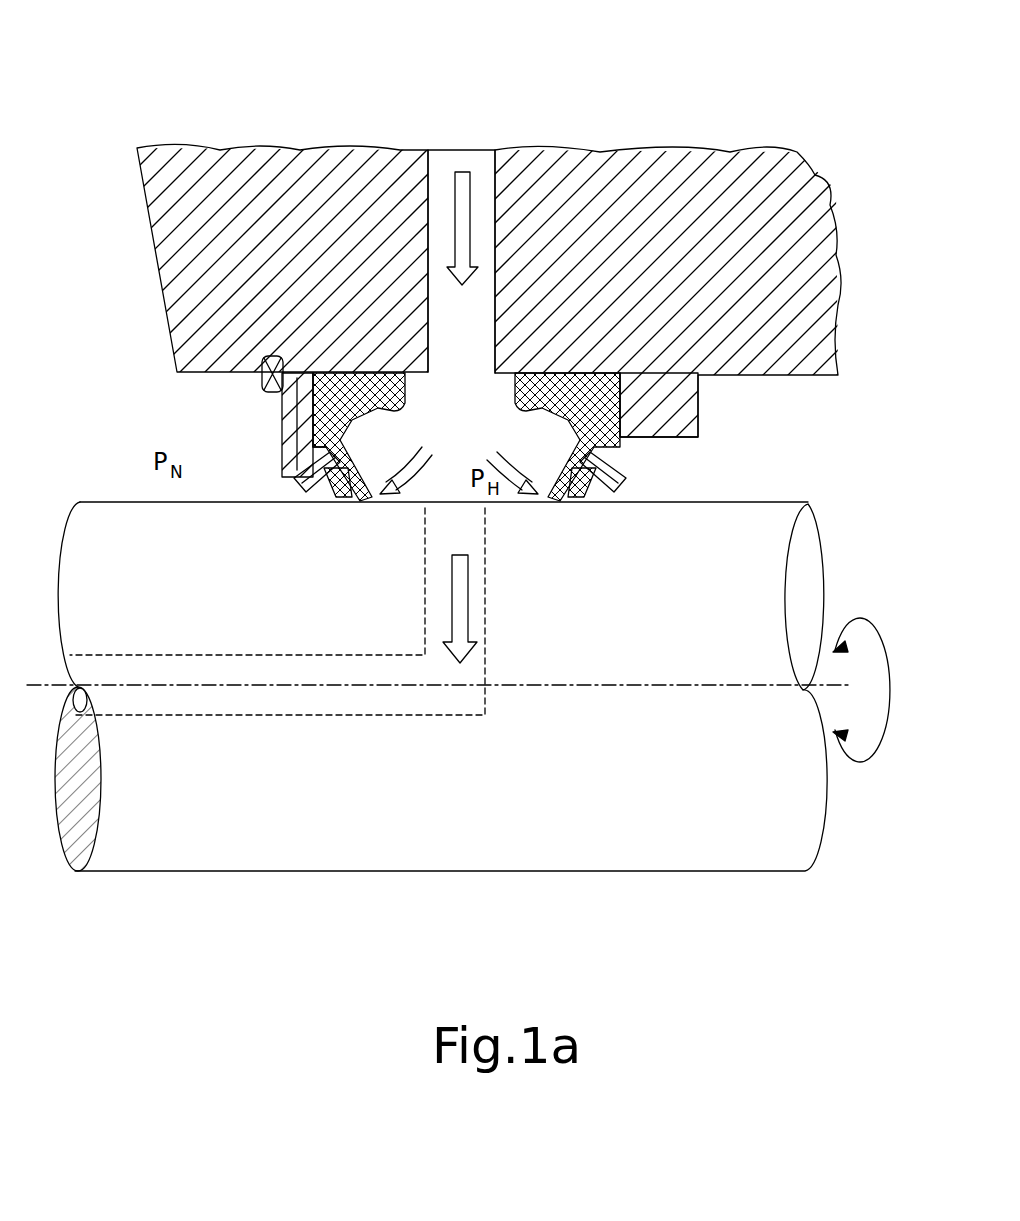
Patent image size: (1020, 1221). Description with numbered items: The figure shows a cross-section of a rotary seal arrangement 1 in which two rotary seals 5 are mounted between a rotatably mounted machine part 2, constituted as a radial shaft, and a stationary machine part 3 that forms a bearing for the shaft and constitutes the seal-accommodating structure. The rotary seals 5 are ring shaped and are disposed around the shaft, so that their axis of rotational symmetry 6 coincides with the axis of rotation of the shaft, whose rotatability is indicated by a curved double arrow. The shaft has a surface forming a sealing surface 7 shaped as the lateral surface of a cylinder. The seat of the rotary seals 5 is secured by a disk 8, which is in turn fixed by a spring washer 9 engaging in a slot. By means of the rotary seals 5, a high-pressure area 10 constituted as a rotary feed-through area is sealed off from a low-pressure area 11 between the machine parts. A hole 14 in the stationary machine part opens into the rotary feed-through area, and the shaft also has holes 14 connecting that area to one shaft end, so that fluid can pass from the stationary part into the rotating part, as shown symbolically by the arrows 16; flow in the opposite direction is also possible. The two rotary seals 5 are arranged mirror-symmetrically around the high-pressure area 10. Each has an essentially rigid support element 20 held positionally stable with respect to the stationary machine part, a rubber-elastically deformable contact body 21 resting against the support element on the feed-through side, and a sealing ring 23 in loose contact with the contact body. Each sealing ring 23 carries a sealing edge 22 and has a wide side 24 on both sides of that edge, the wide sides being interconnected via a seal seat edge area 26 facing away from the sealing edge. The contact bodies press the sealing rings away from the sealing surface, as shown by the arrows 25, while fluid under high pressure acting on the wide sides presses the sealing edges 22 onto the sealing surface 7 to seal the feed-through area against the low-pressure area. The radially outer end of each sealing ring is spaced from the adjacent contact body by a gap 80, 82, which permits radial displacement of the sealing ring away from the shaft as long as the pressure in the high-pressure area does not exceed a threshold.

The rotary seal arrangement 1 is at (170, 120).
The rotatably mounted machine part 2 is at (100, 580).
The machine part 3 is at (672, 195).
The rotary seal 5 is at (567, 429).
The axis of rotational symmetry 6 is at (40, 692).
The sealing surface 7 is at (130, 497).
The disk 8 is at (283, 431).
The spring washer 9 is at (260, 378).
The high-pressure area 10 is at (442, 496).
The low-pressure area 11 is at (274, 494).
The hole 14 is at (440, 150).
The arrows 16 is at (440, 174).
The support element 20 is at (283, 400).
The contact body 21 is at (517, 393).
The sealing edge 22 is at (373, 512).
The sealing ring 23 is at (350, 503).
The wide side 24 is at (558, 446).
The arrows 25 is at (310, 503).
The seal seat edge area 26 is at (547, 397).
The gap 80 is at (385, 405).
The gap 82 is at (545, 402).